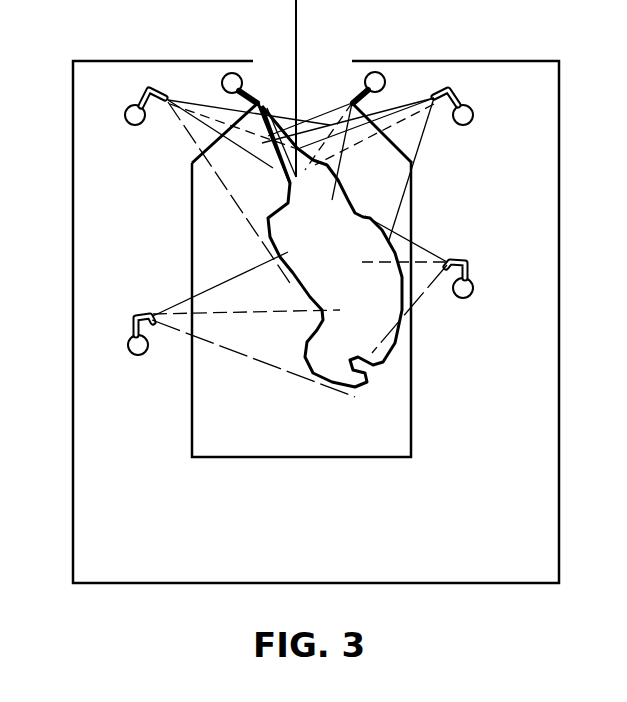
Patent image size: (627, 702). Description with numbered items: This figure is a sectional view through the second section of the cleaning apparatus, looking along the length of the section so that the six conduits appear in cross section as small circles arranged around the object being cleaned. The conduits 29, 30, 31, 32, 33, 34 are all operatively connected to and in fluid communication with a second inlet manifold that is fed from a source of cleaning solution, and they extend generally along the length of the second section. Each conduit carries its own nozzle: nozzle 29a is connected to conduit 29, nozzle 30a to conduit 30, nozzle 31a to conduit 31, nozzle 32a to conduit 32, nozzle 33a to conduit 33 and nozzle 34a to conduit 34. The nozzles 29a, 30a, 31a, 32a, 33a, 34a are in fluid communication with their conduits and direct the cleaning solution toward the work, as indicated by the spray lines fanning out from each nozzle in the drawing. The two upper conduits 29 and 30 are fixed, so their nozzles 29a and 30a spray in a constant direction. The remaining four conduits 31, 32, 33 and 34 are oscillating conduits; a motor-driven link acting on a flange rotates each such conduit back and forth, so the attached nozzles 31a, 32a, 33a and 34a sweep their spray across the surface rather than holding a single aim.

The conduit 29 is at (375, 72).
The nozzle 29a is at (350, 96).
The conduit 30 is at (229, 73).
The nozzle 30a is at (257, 98).
The conduit 31 is at (473, 113).
The nozzle 31a is at (452, 88).
The conduit 32 is at (473, 288).
The nozzle 32a is at (470, 262).
The conduit 33 is at (128, 345).
The nozzle 33a is at (128, 318).
The conduit 34 is at (126, 117).
The nozzle 34a is at (150, 95).